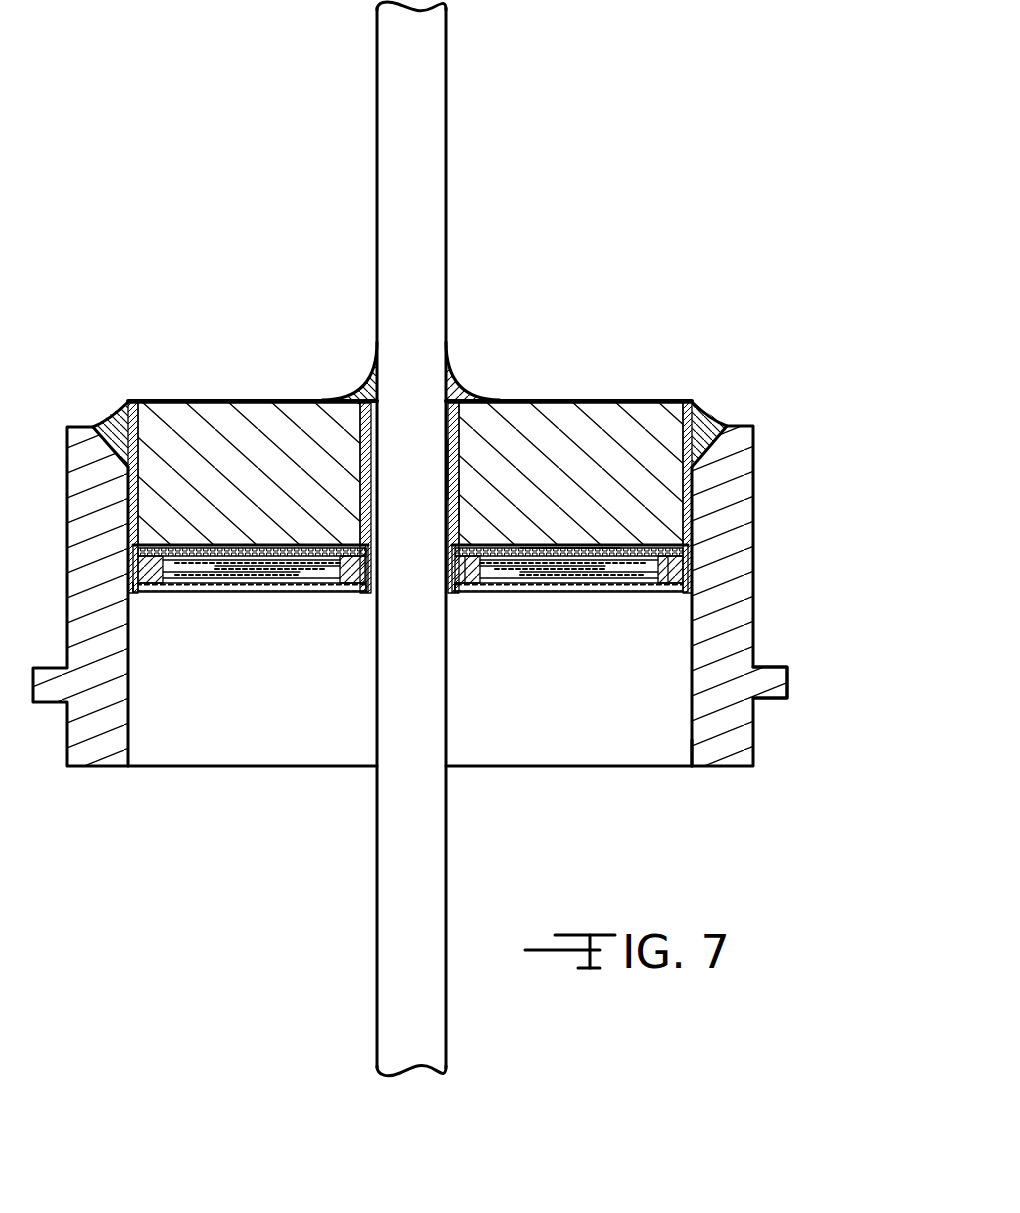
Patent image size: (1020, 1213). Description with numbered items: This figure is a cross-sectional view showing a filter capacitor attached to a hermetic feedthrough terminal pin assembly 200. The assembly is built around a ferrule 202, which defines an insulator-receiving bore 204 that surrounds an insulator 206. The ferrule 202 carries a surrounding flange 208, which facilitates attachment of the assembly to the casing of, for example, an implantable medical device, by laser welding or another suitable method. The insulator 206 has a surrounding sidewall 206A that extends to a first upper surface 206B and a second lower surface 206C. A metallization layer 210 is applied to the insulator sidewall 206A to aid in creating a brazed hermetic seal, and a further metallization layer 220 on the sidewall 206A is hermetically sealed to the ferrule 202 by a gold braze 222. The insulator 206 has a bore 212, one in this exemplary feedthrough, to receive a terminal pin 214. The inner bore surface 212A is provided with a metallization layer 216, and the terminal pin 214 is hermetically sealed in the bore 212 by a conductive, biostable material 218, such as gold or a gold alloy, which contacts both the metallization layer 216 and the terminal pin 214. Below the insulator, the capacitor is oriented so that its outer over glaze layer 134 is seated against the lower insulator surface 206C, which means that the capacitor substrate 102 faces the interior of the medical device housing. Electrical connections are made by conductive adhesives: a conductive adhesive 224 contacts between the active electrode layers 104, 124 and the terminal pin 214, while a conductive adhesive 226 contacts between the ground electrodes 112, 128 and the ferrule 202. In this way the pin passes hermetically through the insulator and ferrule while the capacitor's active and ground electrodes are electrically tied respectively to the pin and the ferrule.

The terminal pin 214 is at (427, 152).
The feedthrough terminal pin assembly 200 is at (676, 272).
The insulator 206 is at (643, 430).
The insulator sidewall 206A is at (140, 440).
The first upper surface 206B is at (155, 392).
The second lower surface 206C is at (250, 572).
The conductive biostable material 218 is at (458, 390).
The bore 212 is at (462, 433).
The inner bore surface 212A is at (470, 465).
The metallization layer 216 is at (463, 498).
The metallization layer 220 is at (705, 440).
The gold braze 222 is at (717, 428).
The ferrule 202 is at (735, 495).
The insulator-receiving bore 204 is at (691, 766).
The flange 208 is at (775, 683).
The ground electrode 128 is at (695, 550).
The metallization layer 210 is at (133, 490).
The conductive adhesive 224 is at (133, 593).
The substrate 102 is at (220, 592).
The conductive adhesive 226 is at (370, 593).
The active electrode layer 124 is at (445, 593).
The active electrode layer 104 is at (468, 593).
The ground electrode 112 is at (663, 593).
The outer over glaze layer 134 is at (545, 548).